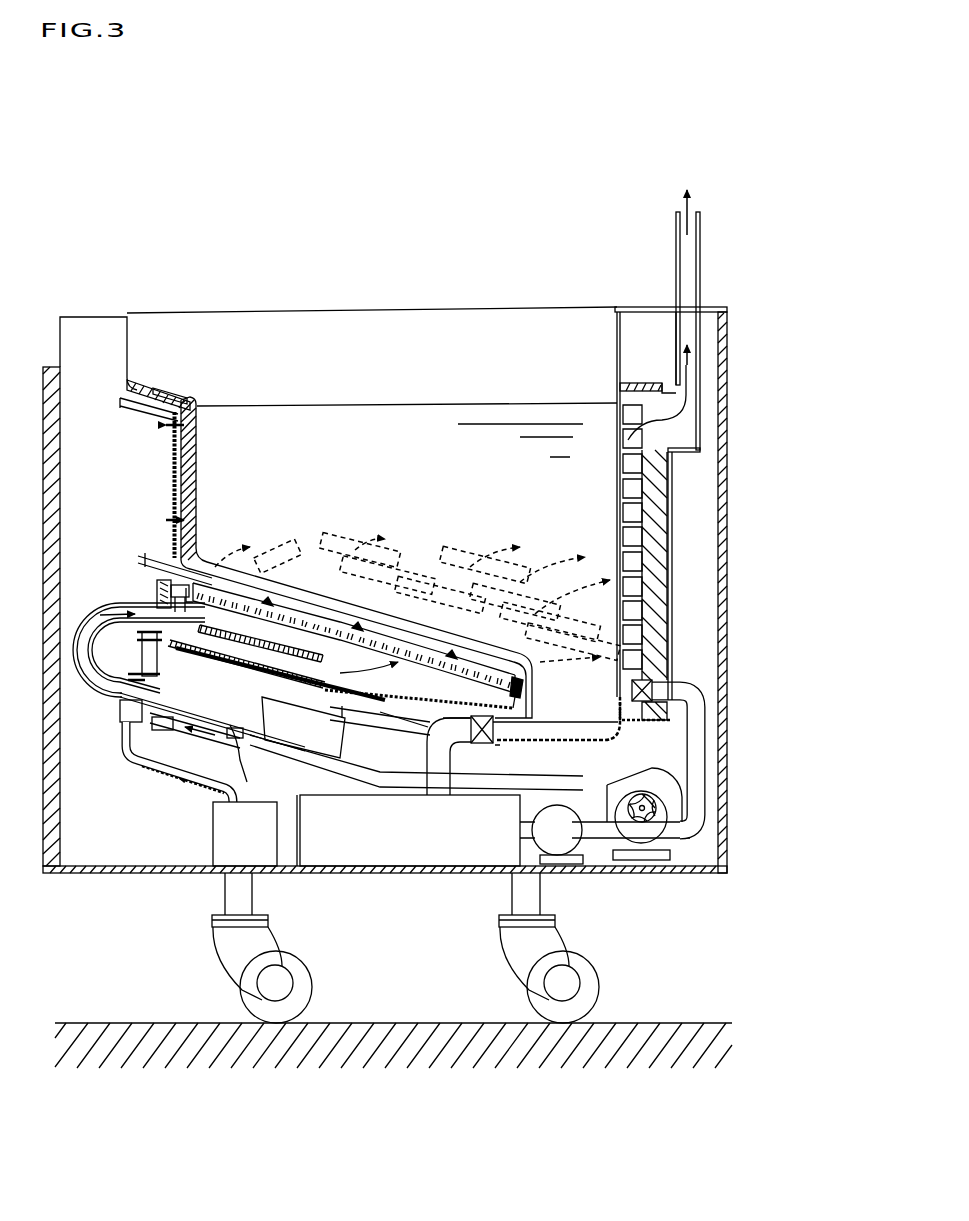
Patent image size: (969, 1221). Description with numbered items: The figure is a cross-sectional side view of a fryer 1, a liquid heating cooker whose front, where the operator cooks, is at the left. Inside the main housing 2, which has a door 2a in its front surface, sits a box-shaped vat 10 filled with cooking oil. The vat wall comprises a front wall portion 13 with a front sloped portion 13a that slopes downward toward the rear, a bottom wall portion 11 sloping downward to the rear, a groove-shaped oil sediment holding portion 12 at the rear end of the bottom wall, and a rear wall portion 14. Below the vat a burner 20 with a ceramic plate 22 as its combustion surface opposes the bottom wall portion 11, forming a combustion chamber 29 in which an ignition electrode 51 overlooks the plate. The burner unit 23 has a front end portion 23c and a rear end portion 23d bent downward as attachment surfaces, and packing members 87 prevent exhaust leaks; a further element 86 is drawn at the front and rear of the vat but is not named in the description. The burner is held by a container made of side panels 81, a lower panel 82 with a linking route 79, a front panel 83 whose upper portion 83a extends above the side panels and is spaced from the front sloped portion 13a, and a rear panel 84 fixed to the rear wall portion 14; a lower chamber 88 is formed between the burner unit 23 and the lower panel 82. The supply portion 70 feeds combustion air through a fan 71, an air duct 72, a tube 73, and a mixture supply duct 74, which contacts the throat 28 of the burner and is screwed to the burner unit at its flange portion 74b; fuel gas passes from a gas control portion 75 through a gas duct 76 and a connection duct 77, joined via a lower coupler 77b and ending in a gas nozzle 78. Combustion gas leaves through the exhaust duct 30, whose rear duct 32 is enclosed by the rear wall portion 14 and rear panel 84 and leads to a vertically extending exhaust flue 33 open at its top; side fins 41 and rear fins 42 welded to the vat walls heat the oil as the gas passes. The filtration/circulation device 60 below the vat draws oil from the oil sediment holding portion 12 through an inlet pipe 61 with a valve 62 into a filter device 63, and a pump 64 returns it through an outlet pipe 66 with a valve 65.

The fryer 1 is at (390, 300).
The main housing 2 is at (724, 320).
The door 2a is at (43, 375).
The vat 10 is at (118, 334).
The bottom wall portion 11 is at (322, 585).
The oil sediment holding portion 12 is at (560, 742).
The front wall portion 13 is at (198, 440).
The front sloped portion 13a is at (160, 386).
The rear wall portion 14 is at (622, 352).
The burner 20 is at (205, 690).
The ceramic plate 22 is at (460, 662).
The burner unit 23 is at (408, 703).
The front end portion 23c is at (215, 607).
The rear end portion 23d is at (530, 682).
The throat 28 is at (293, 642).
The combustion chamber 29 is at (344, 612).
The exhaust duct 30 is at (678, 537).
The rear duct 32 is at (636, 605).
The exhaust flue 33 is at (700, 243).
The side fins 41 is at (430, 560).
The rear fins 42 is at (652, 636).
The ignition electrode 51 is at (150, 557).
The filtration/circulation device 60 is at (337, 892).
The inlet pipe 61 is at (448, 762).
The valve 62 is at (487, 745).
The filter device 63 is at (297, 850).
The pump 64 is at (582, 855).
The valve 65 is at (652, 672).
The outlet pipe 66 is at (688, 748).
The supply portion 70 is at (115, 745).
The fan 71 is at (676, 860).
The air duct 72 is at (332, 796).
The tube 73 is at (222, 726).
The mixture supply duct 74 is at (90, 622).
The flange portion 74b is at (142, 648).
The gas control portion 75 is at (212, 850).
The gas duct 76 is at (183, 778).
The connection duct 77 is at (125, 787).
The lower coupler 77b is at (162, 750).
The gas nozzle 78 is at (122, 708).
The linking route 79 is at (275, 760).
The side panels 81 is at (345, 706).
The lower panel 82 is at (298, 705).
The front panel 83 is at (170, 480).
The upper portion 83a is at (155, 416).
The rear panel 84 is at (668, 515).
The seal 86 is at (190, 395).
The packing members 87 is at (155, 580).
The lower chamber 88 is at (383, 722).